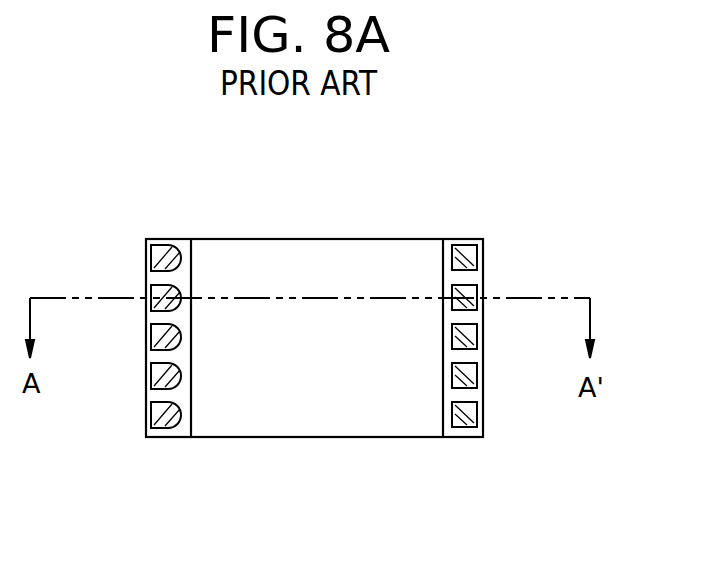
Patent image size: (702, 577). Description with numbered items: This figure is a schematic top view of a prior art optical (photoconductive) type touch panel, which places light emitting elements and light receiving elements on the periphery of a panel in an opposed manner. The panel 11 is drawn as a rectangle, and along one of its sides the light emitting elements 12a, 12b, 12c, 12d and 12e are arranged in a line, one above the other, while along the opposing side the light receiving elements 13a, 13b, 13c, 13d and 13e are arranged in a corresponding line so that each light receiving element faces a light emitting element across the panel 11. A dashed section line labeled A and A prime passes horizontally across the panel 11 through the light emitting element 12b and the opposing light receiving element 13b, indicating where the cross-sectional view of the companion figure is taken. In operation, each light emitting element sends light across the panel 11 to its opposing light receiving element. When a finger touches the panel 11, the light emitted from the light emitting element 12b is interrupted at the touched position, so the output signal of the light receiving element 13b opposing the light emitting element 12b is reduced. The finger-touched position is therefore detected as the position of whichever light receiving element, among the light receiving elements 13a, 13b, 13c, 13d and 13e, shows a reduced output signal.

The panel 11 is at (428, 437).
The light emitting element 12a is at (150, 257).
The light emitting element 12b is at (152, 296).
The light emitting element 12c is at (152, 335).
The light emitting element 12d is at (152, 375).
The light emitting element 12e is at (152, 414).
The light receiving element 13a is at (483, 252).
The light receiving element 13b is at (483, 290).
The light receiving element 13c is at (483, 333).
The light receiving element 13d is at (483, 372).
The light receiving element 13e is at (483, 413).